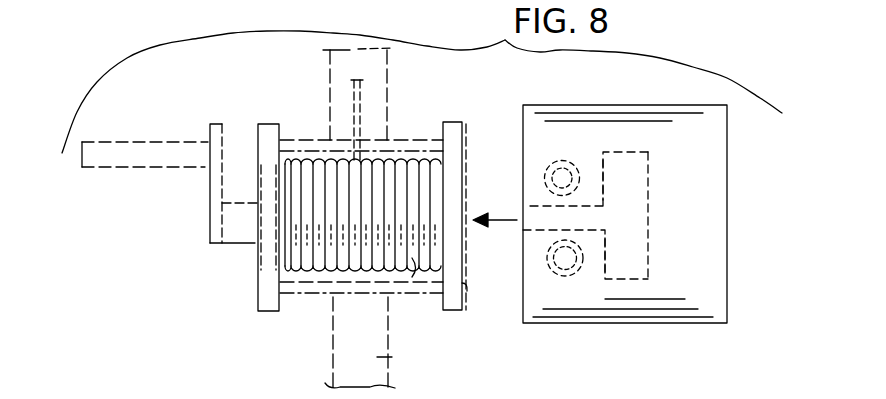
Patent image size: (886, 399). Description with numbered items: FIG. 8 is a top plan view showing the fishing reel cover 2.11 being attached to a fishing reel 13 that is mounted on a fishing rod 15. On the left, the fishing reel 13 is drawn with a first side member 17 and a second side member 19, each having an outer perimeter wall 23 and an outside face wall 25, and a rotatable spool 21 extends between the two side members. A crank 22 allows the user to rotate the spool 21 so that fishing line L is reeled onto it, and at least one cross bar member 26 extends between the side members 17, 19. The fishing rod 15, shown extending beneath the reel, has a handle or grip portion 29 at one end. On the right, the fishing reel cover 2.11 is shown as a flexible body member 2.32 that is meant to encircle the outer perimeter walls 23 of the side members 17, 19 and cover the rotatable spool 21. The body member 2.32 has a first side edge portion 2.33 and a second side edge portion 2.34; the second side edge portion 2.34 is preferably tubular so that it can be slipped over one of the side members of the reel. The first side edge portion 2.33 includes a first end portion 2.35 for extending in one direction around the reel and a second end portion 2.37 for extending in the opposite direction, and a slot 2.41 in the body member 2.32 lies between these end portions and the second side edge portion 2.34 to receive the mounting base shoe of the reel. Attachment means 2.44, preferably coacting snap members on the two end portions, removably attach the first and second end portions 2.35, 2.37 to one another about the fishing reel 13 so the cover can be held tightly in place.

The crank 22 is at (168, 168).
The outside face wall 25 is at (262, 142).
The outer perimeter wall 23 is at (272, 99).
The cross bar member 26 is at (303, 139).
The first side member 17 is at (260, 252).
The fishing reel 13 is at (258, 268).
The rotatable spool 21 is at (420, 295).
The second side member 19 is at (453, 284).
The fishing rod 15 is at (333, 345).
The handle or grip portion 29 is at (390, 357).
The fishing line L is at (360, 108).
The fishing reel cover 2.11 is at (753, 150).
The flexible body member 2.32 is at (786, 287).
The second side edge portion 2.34 is at (714, 297).
The first end portion 2.35 is at (528, 185).
The first side edge portion 2.33 is at (535, 238).
The second end portion 2.37 is at (512, 270).
The slot 2.41 is at (625, 252).
The attachment means 2.44 is at (565, 160).